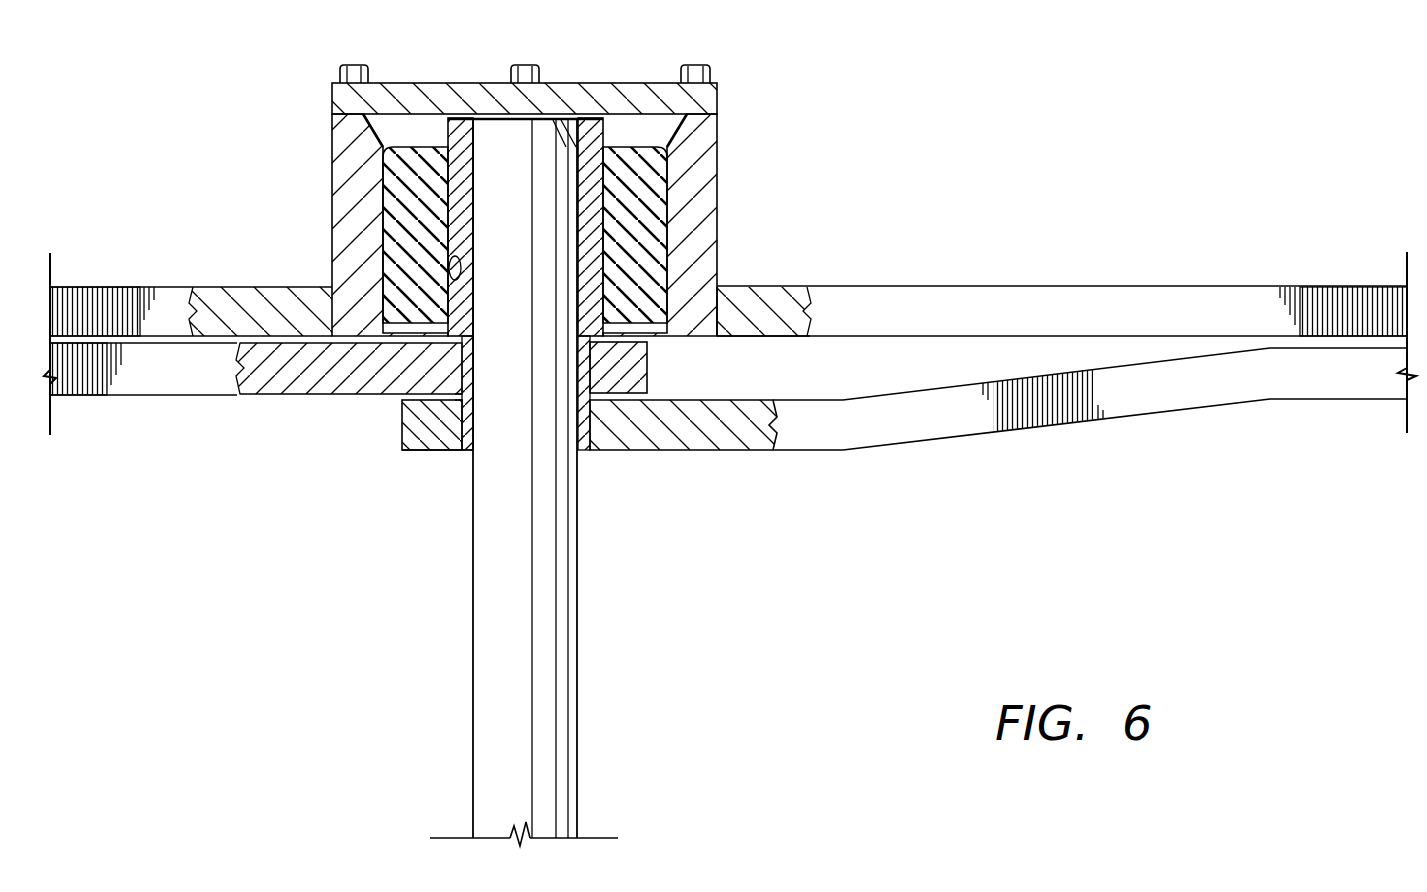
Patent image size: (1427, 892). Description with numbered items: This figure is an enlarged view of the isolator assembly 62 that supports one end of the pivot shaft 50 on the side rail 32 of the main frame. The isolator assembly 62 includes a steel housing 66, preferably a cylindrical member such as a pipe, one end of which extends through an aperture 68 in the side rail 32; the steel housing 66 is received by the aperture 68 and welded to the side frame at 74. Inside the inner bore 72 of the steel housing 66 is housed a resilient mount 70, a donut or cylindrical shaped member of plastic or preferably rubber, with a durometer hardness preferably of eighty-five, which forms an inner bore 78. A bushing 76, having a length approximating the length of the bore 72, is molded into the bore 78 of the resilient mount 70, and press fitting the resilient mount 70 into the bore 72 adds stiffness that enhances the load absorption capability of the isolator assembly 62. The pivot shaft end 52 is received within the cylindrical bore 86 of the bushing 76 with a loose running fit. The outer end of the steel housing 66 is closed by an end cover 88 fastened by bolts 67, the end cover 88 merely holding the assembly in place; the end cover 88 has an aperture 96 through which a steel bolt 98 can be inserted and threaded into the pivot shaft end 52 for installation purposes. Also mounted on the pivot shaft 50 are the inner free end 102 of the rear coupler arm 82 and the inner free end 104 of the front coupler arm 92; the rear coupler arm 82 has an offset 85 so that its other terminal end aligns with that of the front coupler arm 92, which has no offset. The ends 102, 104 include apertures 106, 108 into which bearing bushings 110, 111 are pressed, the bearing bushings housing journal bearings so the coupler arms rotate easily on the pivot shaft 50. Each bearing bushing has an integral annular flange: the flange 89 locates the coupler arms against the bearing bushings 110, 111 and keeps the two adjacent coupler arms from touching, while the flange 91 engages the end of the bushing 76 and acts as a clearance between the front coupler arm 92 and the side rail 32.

The side rail 32 is at (1085, 297).
The pivot shaft 50 is at (578, 620).
The pivot shaft end 52 is at (488, 175).
The isolator assembly 62 is at (549, 200).
The steel housing 66 is at (700, 163).
The bolts 67 is at (700, 65).
The aperture 68 is at (745, 338).
The resilient mount 70 is at (388, 198).
The inner bore 72 is at (667, 250).
The weld 74 is at (722, 280).
The bushing 76 is at (458, 130).
The inner bore 78 is at (455, 262).
The rear coupler arm 82 is at (794, 432).
The offset 85 is at (1044, 410).
The cylindrical bore 86 is at (576, 225).
The end cover 88 is at (347, 92).
The annular flange 89 is at (467, 399).
The annular flange 91 is at (467, 333).
The front coupler arm 92 is at (162, 380).
The aperture 96 is at (558, 95).
The steel bolt 98 is at (521, 66).
The inner free end 102 is at (420, 428).
The inner free end 104 is at (630, 380).
The aperture 106 is at (600, 435).
The aperture 108 is at (588, 372).
The bearing bushing 110 is at (455, 447).
The bearing bushing 111 is at (460, 372).